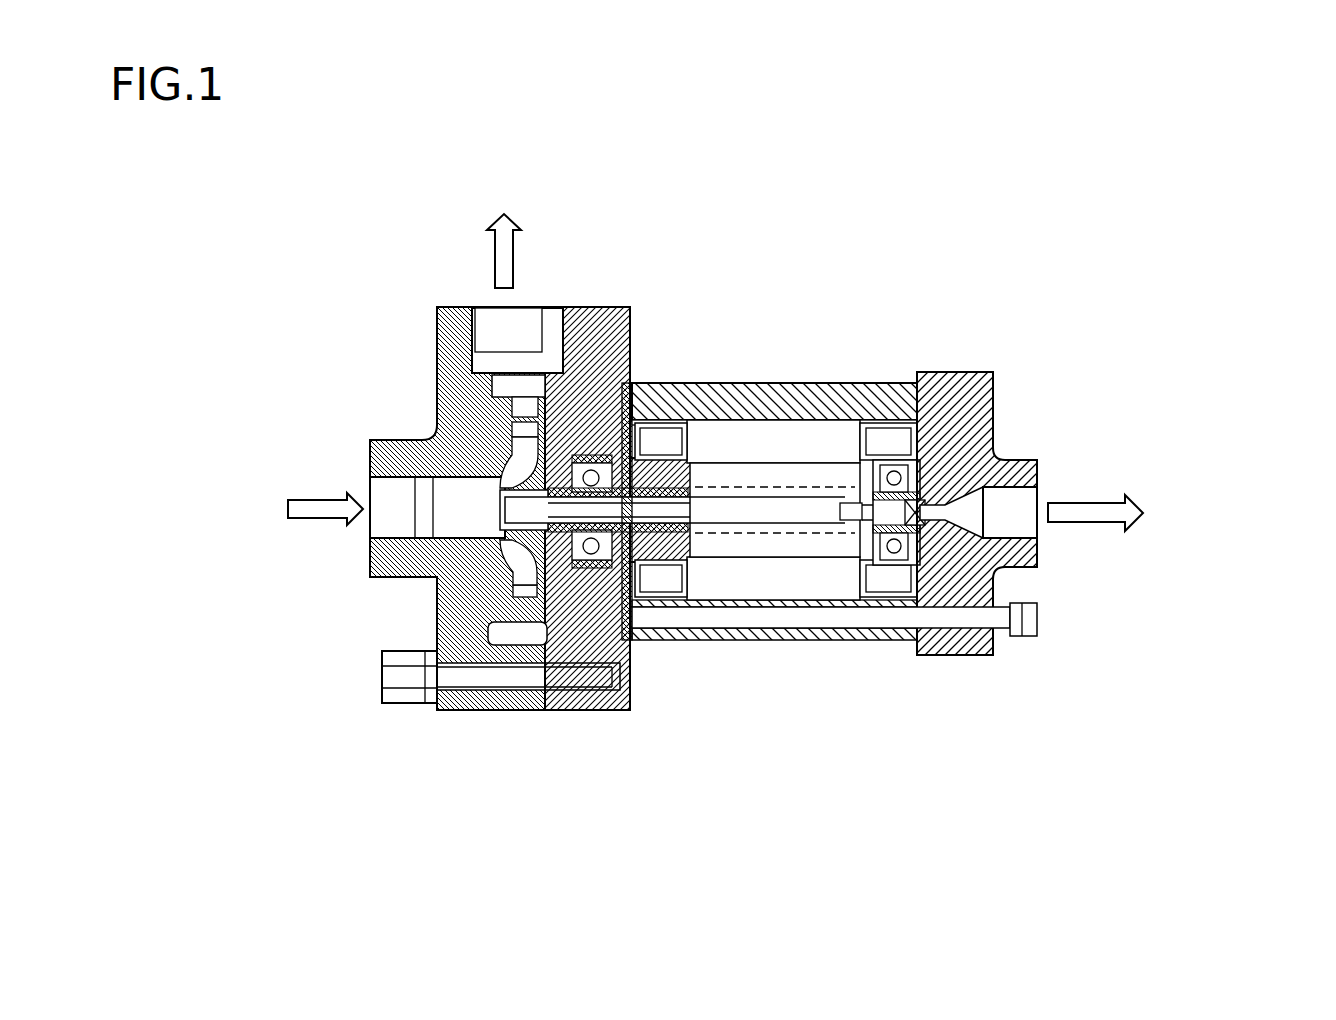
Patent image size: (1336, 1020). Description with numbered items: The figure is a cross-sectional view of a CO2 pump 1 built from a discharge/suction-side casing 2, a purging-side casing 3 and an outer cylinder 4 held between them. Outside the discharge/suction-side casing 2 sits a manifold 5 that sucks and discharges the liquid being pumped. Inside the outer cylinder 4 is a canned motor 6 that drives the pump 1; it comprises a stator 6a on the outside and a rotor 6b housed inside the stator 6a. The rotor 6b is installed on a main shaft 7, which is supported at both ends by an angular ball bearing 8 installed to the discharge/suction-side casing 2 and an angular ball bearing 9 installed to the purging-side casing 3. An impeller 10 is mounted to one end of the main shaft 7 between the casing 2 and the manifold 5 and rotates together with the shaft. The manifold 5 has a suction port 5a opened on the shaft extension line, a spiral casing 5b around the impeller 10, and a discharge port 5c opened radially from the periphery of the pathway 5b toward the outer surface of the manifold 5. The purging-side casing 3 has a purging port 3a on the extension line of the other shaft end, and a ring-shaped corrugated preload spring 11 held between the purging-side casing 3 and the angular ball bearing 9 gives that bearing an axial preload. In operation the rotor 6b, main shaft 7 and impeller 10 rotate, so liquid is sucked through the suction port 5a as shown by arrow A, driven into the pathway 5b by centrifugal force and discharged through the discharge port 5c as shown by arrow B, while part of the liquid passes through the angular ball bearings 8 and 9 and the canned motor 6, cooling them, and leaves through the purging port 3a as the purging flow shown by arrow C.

The pump 1 is at (834, 262).
The discharge/suction-side casing 2 is at (605, 322).
The purging-side casing 3 is at (938, 392).
The purging port 3a is at (1020, 523).
The outer cylinder 4 is at (727, 403).
The manifold 5 is at (455, 407).
The suction port 5a is at (385, 525).
The spiral casing 5b is at (510, 387).
The discharge port 5c is at (487, 335).
The canned motor 6 is at (859, 540).
The stator 6a is at (813, 583).
The rotor 6b is at (820, 477).
The main shaft 7 is at (578, 622).
The angular ball bearing 8 is at (595, 462).
The angular ball bearing 9 is at (917, 567).
The impeller 10 is at (494, 628).
The preload spring 11 is at (930, 470).
The arrow A is at (327, 508).
The arrow B is at (503, 227).
The arrow C is at (1093, 518).